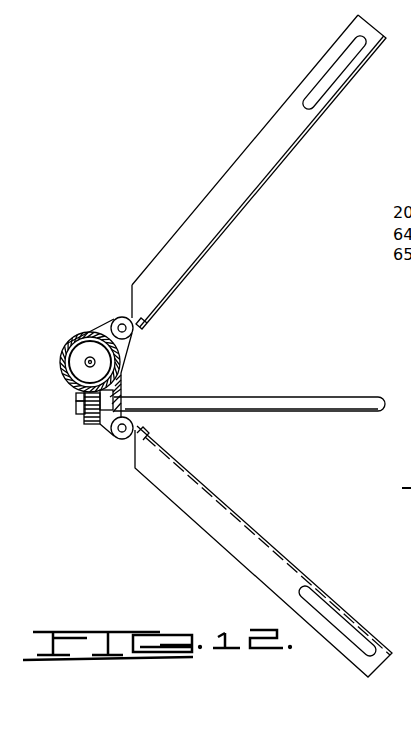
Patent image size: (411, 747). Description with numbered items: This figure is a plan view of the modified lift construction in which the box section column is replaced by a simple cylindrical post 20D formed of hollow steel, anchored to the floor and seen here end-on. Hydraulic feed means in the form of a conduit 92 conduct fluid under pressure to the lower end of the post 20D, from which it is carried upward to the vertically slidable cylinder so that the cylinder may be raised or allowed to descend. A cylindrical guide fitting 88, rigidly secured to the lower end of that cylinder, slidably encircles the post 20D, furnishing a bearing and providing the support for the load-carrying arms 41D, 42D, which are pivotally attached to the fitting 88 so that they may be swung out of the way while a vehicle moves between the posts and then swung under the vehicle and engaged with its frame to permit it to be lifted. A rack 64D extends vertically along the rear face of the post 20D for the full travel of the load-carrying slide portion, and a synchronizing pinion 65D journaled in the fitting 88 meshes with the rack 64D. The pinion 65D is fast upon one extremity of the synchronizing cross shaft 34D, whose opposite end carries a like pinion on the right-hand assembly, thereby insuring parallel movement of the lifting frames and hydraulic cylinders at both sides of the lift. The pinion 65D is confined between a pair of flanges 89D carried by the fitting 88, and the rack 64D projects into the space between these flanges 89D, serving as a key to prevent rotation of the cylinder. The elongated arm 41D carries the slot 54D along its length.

The cylindrical post 20D is at (104, 362).
The synchronizing cross shaft 34D is at (313, 374).
The load-carrying arm 41D is at (262, 147).
The load-carrying arm 42D is at (262, 543).
The slot 54D is at (343, 62).
The rack 64D is at (80, 396).
The synchronizing pinion 65D is at (78, 412).
The cylindrical guide fitting 88 is at (70, 341).
The flanges 89D is at (101, 425).
The conduit 92 is at (85, 363).